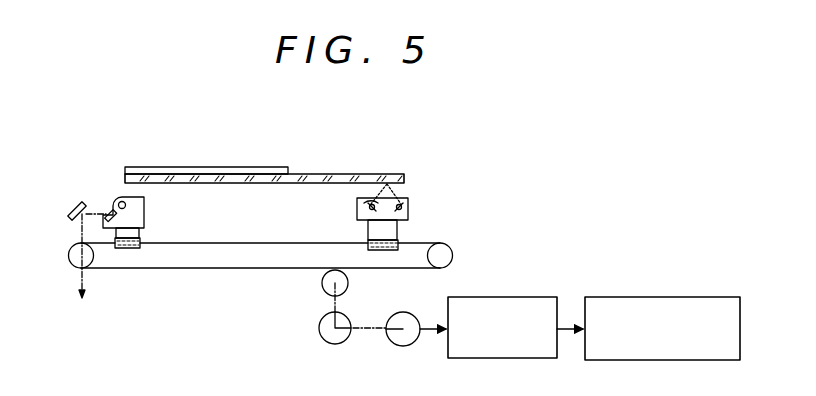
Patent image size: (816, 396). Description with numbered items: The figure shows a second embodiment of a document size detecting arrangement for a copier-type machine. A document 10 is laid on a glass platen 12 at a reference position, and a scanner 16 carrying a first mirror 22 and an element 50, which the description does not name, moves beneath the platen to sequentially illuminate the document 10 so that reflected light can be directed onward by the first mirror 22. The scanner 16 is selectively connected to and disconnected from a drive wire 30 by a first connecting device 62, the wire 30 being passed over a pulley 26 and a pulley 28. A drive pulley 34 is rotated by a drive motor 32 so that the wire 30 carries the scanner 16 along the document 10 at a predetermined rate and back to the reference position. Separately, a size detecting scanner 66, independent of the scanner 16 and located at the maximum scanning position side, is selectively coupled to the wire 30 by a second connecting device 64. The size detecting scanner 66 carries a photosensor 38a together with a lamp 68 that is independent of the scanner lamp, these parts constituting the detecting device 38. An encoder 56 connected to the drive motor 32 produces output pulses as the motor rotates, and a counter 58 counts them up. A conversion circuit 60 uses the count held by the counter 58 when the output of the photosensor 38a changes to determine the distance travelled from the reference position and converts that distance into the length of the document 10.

The document 10 is at (247, 167).
The glass platen 12 is at (335, 174).
The scanner 16 is at (144, 214).
The first mirror 22 is at (78, 203).
The pulley 26 is at (74, 263).
The pulley 28 is at (453, 257).
The drive wire 30 is at (183, 269).
The drive motor 32 is at (321, 330).
The drive pulley 34 is at (323, 285).
The detecting device 38 is at (357, 217).
The photosensor 38a is at (404, 200).
The light source 50 is at (122, 201).
The encoder 56 is at (403, 347).
The counter 58 is at (509, 359).
The conversion circuit 60 is at (655, 361).
The first connecting device 62 is at (130, 249).
The second connecting device 64 is at (381, 251).
The size detecting scanner 66 is at (397, 230).
The lamp 68 is at (357, 200).